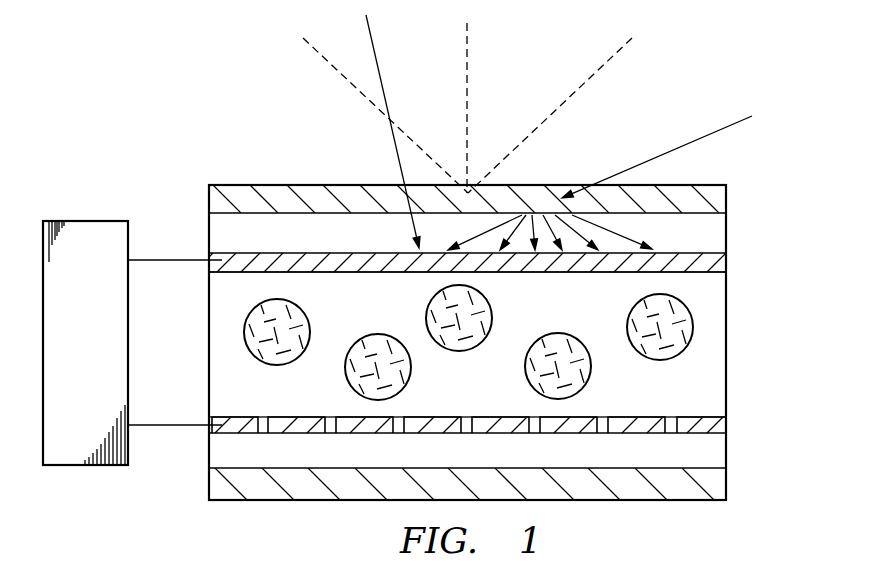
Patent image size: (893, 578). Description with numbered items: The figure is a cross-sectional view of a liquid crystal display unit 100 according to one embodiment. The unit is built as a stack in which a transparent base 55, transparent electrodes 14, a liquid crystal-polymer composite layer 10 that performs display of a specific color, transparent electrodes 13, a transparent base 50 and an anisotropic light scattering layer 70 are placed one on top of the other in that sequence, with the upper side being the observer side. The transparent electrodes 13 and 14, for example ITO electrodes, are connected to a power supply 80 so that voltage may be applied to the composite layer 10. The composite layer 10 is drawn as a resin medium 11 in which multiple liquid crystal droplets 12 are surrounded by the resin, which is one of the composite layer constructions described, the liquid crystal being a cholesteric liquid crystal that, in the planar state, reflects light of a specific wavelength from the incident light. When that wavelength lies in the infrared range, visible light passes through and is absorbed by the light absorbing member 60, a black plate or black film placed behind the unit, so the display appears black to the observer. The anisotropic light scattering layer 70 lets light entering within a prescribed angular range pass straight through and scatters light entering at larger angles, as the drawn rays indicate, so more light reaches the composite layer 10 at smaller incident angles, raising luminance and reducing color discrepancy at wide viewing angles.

The liquid crystal display unit 100 is at (232, 174).
The anisotropic light scattering layer 70 is at (727, 195).
The transparent base 50 is at (727, 235).
The transparent electrodes 13 is at (727, 264).
The liquid crystal-polymer composite layer 10 is at (519, 344).
The medium / matrix layer 11 is at (717, 302).
The microcapsules / particles 12 is at (693, 332).
The transparent electrodes 14 is at (717, 425).
The transparent base 55 is at (718, 451).
The light absorbing member 60 is at (718, 487).
The power supply 80 is at (82, 220).